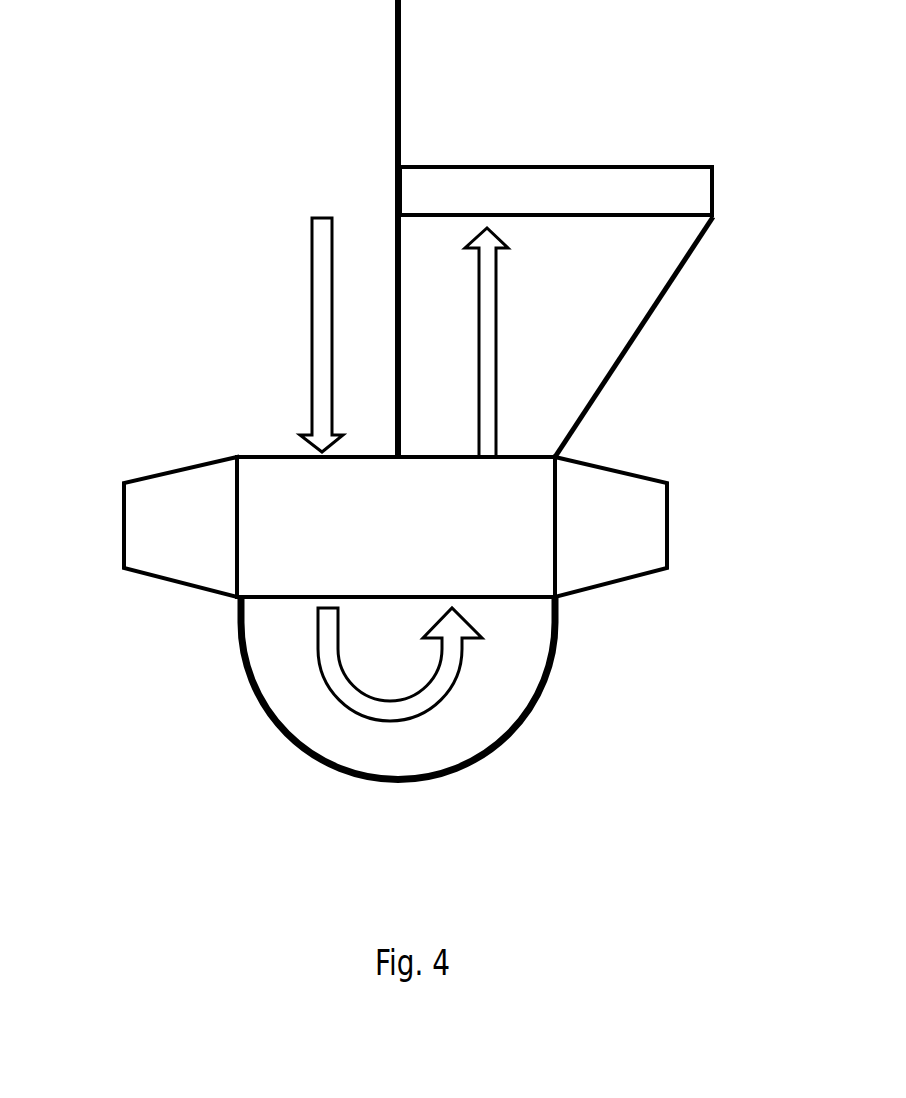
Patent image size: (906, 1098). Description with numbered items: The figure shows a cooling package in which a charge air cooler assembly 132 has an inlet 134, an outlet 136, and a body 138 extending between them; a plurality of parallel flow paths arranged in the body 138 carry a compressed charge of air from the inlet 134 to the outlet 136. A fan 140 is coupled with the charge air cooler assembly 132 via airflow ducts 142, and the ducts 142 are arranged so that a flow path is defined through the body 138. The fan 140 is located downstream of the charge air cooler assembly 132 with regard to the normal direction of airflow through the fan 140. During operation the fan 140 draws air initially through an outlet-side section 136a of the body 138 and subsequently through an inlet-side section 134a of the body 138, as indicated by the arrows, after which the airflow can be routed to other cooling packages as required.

The charge air cooler assembly 132 is at (153, 118).
The inlet 134 is at (605, 545).
The inlet-side section 134a is at (556, 420).
The outlet 136 is at (185, 555).
The outlet-side section 136a is at (258, 412).
The body 138 is at (282, 512).
The fan 140 is at (615, 187).
The airflow ducts 142 is at (307, 758).